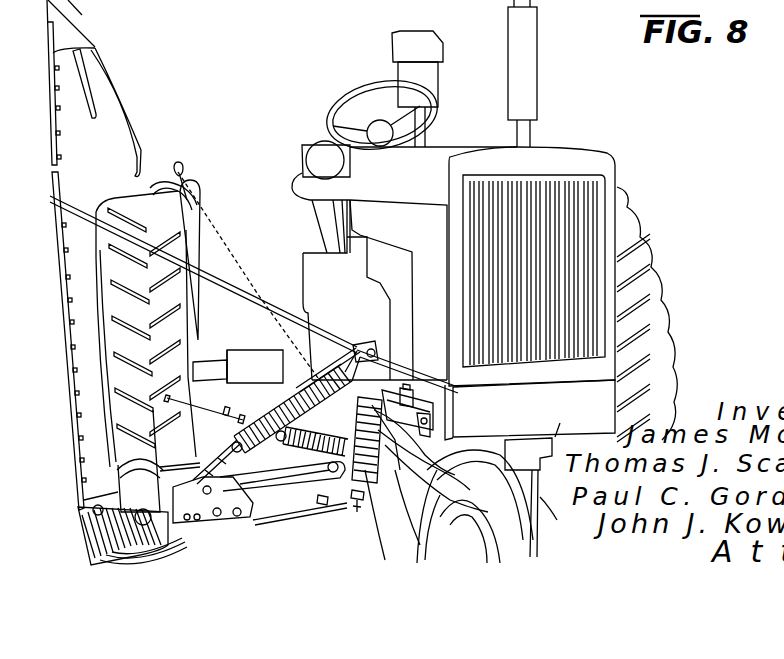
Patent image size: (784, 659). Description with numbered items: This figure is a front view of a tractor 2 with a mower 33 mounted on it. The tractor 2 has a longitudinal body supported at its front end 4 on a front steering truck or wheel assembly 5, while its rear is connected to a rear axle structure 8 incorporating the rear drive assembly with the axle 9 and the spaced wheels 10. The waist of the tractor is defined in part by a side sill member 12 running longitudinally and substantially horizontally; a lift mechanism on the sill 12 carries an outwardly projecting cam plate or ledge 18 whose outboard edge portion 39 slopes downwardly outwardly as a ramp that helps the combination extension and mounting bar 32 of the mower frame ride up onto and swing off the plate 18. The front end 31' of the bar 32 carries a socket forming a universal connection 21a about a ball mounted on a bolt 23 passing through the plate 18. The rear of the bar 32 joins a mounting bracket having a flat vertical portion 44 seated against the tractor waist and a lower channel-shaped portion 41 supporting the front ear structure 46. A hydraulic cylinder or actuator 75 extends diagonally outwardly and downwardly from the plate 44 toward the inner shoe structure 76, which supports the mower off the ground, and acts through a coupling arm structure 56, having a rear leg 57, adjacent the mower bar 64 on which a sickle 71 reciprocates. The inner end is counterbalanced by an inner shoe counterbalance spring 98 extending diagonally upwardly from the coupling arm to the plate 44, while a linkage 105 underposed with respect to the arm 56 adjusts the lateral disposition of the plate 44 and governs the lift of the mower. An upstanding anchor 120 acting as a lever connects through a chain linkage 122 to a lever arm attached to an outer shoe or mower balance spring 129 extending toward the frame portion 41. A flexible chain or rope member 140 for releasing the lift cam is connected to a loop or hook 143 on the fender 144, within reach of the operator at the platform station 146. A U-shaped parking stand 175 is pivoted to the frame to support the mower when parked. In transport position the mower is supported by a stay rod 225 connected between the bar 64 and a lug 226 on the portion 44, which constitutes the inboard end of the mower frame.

The tractor 2 is at (614, 150).
The front end 4 is at (615, 392).
The front steering truck or wheel assembly 5 is at (560, 423).
The spaced wheels 10 is at (123, 340).
The side sill member 12 is at (388, 372).
The cam plate or ledge 18 is at (427, 457).
The universal connection 21a is at (440, 398).
The bolt 23 is at (427, 467).
The front end of mounting bar 31' is at (455, 426).
The combination extension and mounting bar 32 is at (413, 374).
The mower 33 is at (230, 0).
The outboard edge portion 39 is at (447, 497).
The lower channel-shaped portion 41 is at (393, 497).
The vertical portion 44 is at (373, 355).
The front ear structure 46 is at (360, 490).
The coupling arm structure 56 is at (320, 497).
The rear leg 57 is at (307, 497).
The mower bar 64 is at (262, 0).
The sickle 71 is at (270, 0).
The hydraulic cylinder or actuator 75 is at (277, 333).
The inner shoe structure 76 is at (110, 537).
The rear axle structure 8 is at (221, 362).
The axle 9 is at (210, 348).
The inner shoe counterbalance means 98 is at (247, 368).
The linkage 105 is at (323, 497).
The upstanding anchor 120 is at (113, 467).
The linkage 122 is at (207, 437).
The outer shoe or mower balance spring means 129 is at (270, 510).
The flexible member 140 is at (207, 198).
The loop or hook 143 is at (180, 162).
The fender 144 is at (148, 199).
The platform station 146 is at (347, 236).
The parking stand 175 is at (403, 477).
The stay rod 225 is at (213, 272).
The lug 226 is at (357, 348).